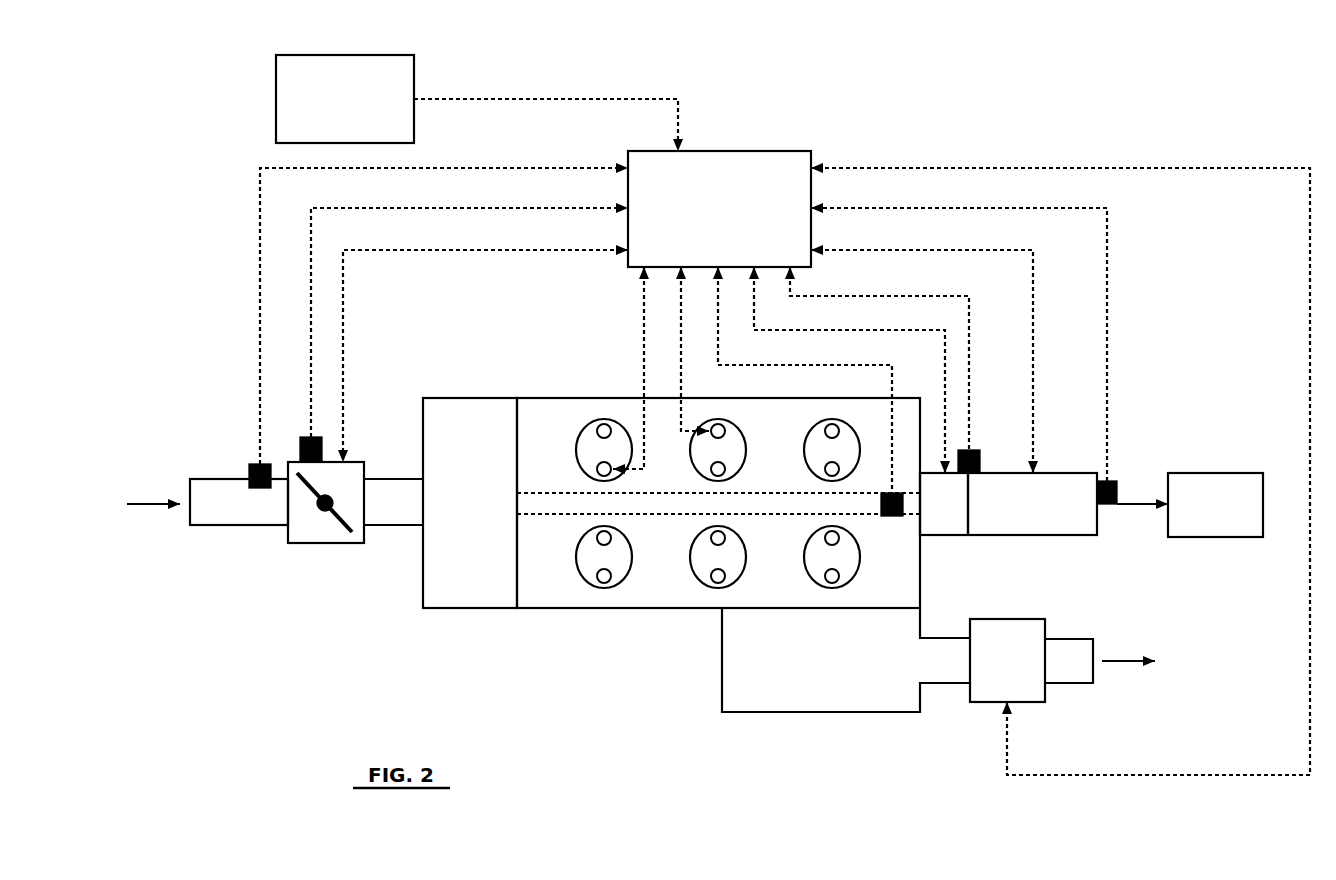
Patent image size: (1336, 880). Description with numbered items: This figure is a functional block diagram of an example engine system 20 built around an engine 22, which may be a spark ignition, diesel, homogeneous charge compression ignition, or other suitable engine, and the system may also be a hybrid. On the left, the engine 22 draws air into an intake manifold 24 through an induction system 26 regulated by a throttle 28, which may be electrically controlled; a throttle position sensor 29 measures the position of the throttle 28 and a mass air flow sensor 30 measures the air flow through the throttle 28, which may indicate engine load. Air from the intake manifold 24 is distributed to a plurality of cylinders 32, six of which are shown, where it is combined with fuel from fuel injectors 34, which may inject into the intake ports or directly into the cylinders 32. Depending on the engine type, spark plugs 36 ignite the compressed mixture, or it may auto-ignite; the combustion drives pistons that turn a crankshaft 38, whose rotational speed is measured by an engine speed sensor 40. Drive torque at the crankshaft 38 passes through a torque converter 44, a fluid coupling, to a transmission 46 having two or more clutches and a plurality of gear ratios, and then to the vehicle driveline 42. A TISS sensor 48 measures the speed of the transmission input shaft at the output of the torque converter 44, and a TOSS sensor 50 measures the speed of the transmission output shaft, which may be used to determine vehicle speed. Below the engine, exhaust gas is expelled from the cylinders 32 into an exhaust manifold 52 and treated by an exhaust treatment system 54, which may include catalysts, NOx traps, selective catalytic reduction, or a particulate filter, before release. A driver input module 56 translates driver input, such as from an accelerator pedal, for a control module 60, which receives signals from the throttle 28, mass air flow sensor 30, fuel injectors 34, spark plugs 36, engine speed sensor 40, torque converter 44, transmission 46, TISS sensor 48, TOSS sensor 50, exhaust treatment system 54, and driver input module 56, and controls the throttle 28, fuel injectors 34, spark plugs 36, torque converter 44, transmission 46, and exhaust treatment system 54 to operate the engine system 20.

The engine system 20 is at (1108, 80).
The engine 22 is at (558, 608).
The intake manifold 24 is at (468, 608).
The induction system 26 is at (215, 479).
The throttle 28 is at (327, 543).
The throttle position sensor 29 is at (306, 437).
The mass air flow sensor 30 is at (260, 488).
The cylinders 32 is at (630, 583).
The fuel injectors 34 is at (597, 538).
The spark plugs 36 is at (826, 578).
The crankshaft 38 is at (718, 505).
The engine speed sensor 40 is at (893, 516).
The driveline 42 is at (1218, 473).
The torque converter 44 is at (955, 537).
The transmission 46 is at (1033, 537).
The TISS sensor 48 is at (980, 450).
The TOSS sensor 50 is at (1110, 505).
The exhaust manifold 52 is at (820, 712).
The exhaust treatment system 54 is at (982, 702).
The driver input module 56 is at (345, 55).
The control module 60 is at (757, 151).